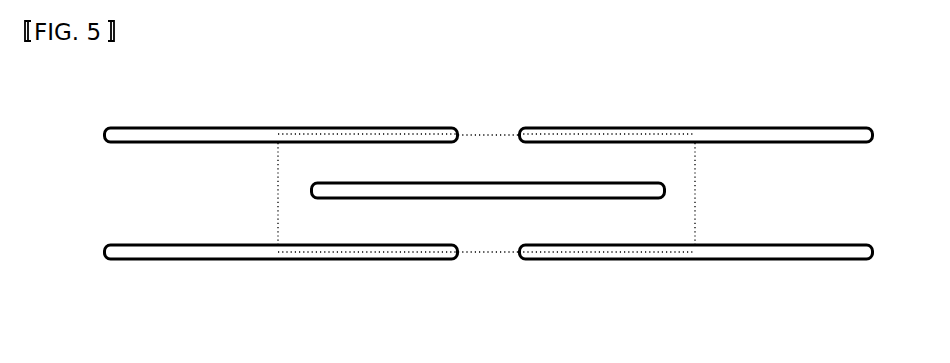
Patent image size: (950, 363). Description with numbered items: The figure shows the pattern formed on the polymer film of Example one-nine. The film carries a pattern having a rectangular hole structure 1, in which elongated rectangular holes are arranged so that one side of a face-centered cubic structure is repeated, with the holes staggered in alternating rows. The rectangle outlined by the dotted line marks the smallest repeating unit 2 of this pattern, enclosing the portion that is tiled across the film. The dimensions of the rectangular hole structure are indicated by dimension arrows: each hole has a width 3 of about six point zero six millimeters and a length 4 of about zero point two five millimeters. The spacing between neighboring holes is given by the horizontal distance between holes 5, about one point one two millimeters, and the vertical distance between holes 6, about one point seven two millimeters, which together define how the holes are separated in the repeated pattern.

The rectangular hole structure 1 is at (725, 263).
The smallest repeating unit 2 is at (702, 195).
The width 3 is at (458, 278).
The length 4 is at (883, 216).
The horizontal distance between holes 5 is at (520, 115).
The vertical distance between holes 6 is at (833, 144).